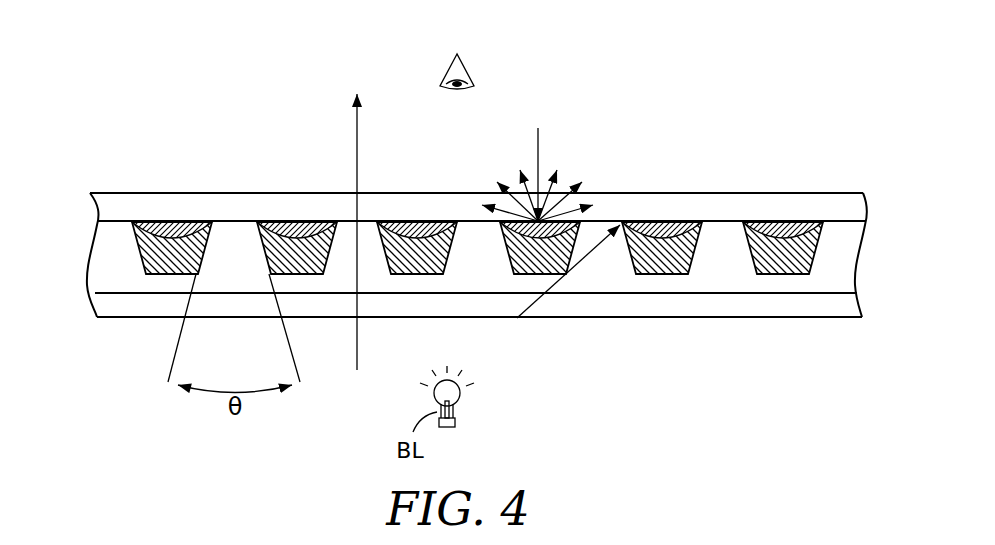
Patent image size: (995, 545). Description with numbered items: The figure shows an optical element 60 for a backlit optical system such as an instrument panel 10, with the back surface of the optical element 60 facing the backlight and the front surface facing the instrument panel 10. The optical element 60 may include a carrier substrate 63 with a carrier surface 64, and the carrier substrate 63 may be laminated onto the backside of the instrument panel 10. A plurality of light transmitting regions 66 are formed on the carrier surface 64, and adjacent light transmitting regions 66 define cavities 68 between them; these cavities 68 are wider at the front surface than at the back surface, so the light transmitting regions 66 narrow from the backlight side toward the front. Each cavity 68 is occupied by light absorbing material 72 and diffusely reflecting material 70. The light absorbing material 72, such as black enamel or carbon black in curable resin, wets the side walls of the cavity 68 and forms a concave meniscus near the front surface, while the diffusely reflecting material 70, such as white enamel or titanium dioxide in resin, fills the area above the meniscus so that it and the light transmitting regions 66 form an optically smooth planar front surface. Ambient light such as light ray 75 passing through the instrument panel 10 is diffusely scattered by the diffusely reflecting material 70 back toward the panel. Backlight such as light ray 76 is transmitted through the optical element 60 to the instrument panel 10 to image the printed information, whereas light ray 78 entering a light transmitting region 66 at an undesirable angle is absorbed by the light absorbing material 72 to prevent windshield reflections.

The instrument panel 10 is at (845, 207).
The optical element 60 is at (125, 128).
The carrier substrate 63 is at (102, 308).
The carrier surface 64 is at (92, 285).
The light transmitting regions 66 is at (99, 263).
The cavities 68 is at (195, 215).
The diffusely reflecting material 70 is at (165, 230).
The light absorbing material 72 is at (165, 275).
The light ray 75 is at (539, 142).
The light ray 76 is at (358, 126).
The light ray 78 is at (536, 302).